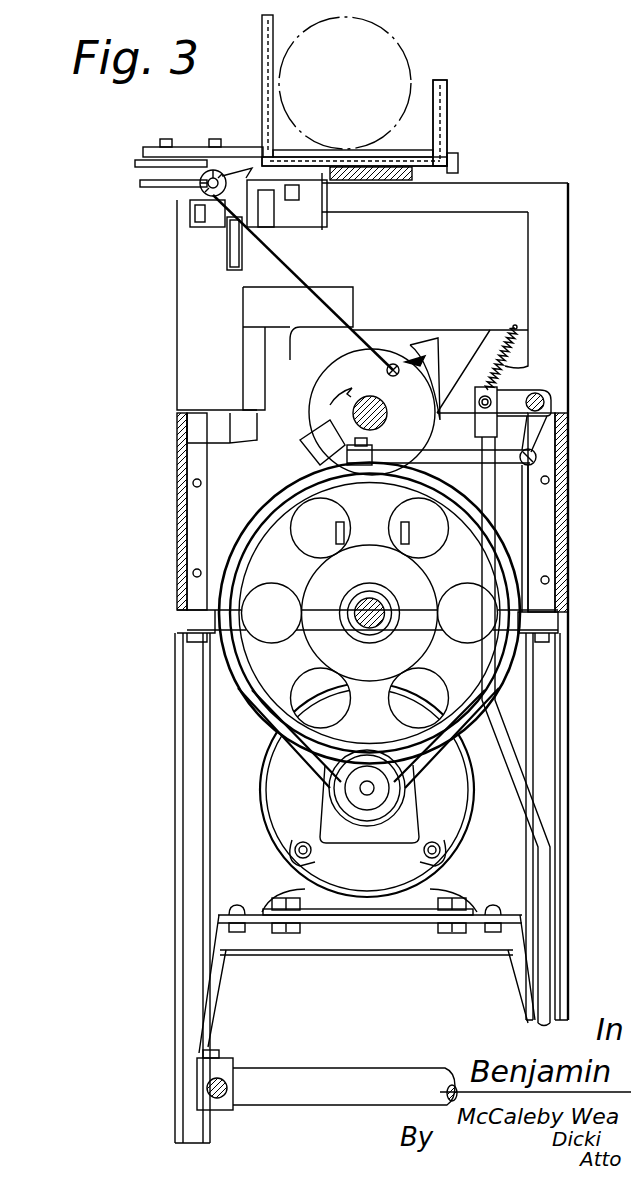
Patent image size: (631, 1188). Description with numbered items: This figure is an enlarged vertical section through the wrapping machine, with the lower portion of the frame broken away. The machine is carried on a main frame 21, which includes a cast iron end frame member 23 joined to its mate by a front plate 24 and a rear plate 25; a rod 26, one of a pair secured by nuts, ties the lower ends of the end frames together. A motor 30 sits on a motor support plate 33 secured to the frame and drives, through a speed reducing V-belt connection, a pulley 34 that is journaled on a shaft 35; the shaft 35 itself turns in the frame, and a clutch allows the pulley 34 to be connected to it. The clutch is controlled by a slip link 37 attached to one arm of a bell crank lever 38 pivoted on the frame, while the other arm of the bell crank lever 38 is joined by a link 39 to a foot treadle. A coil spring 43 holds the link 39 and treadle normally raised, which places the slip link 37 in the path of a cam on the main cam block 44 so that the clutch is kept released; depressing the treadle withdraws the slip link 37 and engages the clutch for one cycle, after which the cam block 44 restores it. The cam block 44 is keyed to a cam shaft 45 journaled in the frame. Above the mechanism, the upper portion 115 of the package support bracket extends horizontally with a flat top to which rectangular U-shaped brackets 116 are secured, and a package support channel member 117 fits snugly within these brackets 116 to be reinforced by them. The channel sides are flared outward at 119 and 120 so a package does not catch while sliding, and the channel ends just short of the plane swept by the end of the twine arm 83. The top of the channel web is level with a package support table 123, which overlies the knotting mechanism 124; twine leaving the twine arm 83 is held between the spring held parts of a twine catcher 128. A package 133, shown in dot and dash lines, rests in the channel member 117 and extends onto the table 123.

The main frame 21 is at (575, 696).
The end frame member 23 is at (175, 762).
The front plate 24 is at (568, 532).
The rear plate 25 is at (177, 530).
The rod 26 is at (205, 1088).
The motor 30 is at (290, 822).
The motor support plate 33 is at (362, 922).
The pulley 34 is at (282, 690).
The shaft 35 is at (386, 602).
The slip link 37 is at (443, 455).
The bell crank lever 38 is at (551, 430).
The link 39 is at (495, 502).
The coil spring 43 is at (510, 358).
The main cam block 44 is at (418, 408).
The cam shaft 45 is at (315, 358).
The twine arm 83 is at (393, 364).
The upper portion of package support bracket 115 is at (384, 180).
The rectangular U-shaped bracket 116 is at (265, 90).
The package support channel member 117 is at (275, 30).
The flared side 119 is at (262, 22).
The flared side 120 is at (447, 88).
The package support table 123 is at (398, 157).
The knotting mechanism 124 is at (192, 208).
The twine catcher 128 is at (200, 190).
The package 133 is at (412, 66).